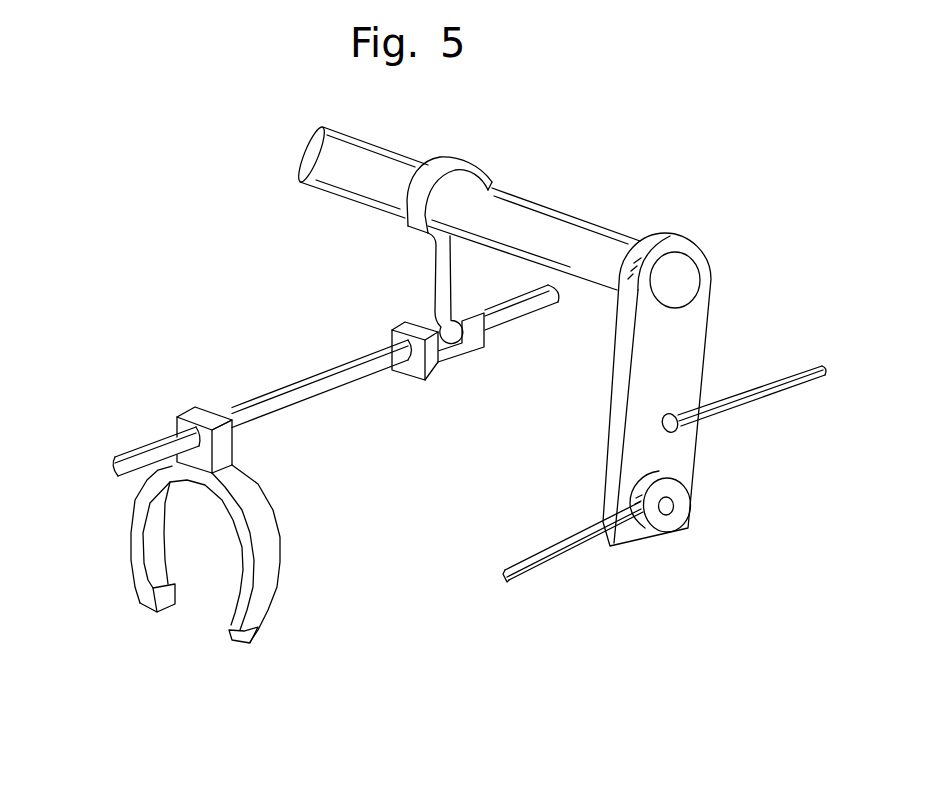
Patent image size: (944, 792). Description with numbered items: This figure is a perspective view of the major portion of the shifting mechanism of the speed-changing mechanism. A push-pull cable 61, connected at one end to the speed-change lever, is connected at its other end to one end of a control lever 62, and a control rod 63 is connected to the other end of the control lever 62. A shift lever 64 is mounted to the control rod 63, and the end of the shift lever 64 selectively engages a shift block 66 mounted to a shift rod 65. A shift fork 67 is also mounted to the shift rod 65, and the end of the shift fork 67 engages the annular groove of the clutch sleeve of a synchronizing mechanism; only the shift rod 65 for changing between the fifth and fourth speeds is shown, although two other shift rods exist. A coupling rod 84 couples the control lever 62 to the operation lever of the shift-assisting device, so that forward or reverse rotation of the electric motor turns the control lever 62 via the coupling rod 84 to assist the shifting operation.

The push-pull cable 61 is at (545, 570).
The control lever 62 is at (680, 455).
The control rod 63 is at (547, 220).
The shift lever 64 is at (440, 276).
The shift rod 65 is at (295, 390).
The shift block 66 is at (433, 370).
The shift fork 67 is at (268, 583).
The coupling rod 84 is at (785, 378).